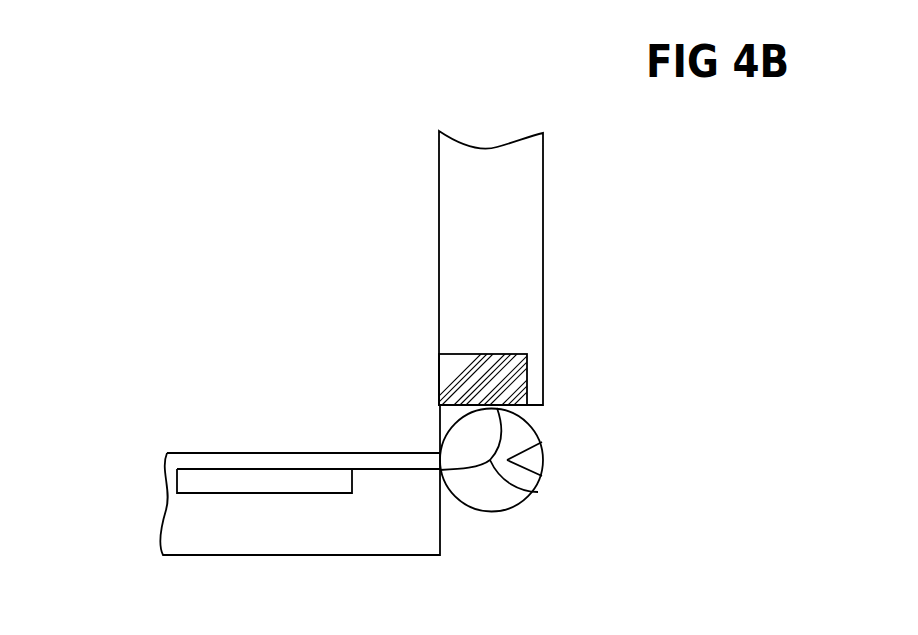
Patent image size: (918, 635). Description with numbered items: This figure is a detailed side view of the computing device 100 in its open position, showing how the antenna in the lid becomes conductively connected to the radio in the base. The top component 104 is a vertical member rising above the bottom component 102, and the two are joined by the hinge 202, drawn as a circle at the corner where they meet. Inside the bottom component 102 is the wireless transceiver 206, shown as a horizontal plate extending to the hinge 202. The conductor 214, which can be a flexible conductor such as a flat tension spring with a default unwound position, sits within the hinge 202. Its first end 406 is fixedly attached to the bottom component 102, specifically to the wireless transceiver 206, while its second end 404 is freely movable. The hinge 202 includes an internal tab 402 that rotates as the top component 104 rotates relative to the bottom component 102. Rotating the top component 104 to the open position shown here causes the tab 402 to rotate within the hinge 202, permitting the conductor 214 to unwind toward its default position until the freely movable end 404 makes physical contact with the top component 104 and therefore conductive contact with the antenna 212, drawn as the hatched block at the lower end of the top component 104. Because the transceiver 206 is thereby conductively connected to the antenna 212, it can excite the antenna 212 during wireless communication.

The computing device 100 is at (118, 142).
The bottom component 102 is at (208, 537).
The top component 104 is at (527, 235).
The hinge 202 is at (498, 512).
The wireless transceiver 206 is at (183, 481).
The antenna 212 is at (451, 378).
The conductor 214 is at (538, 492).
The tab 402 is at (543, 460).
The second end 404 is at (440, 408).
The first end 406 is at (352, 470).